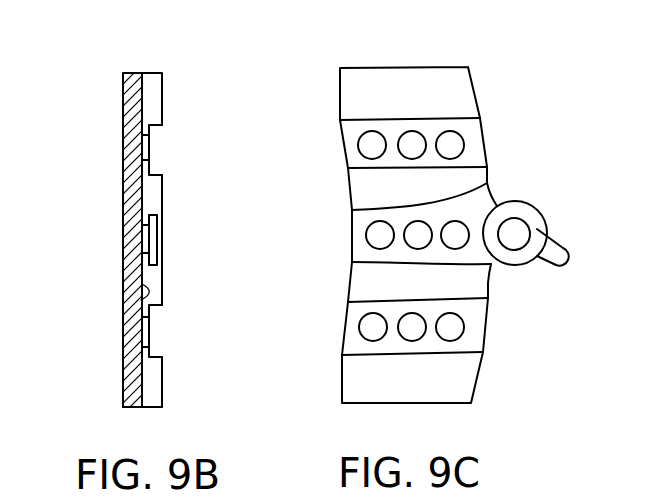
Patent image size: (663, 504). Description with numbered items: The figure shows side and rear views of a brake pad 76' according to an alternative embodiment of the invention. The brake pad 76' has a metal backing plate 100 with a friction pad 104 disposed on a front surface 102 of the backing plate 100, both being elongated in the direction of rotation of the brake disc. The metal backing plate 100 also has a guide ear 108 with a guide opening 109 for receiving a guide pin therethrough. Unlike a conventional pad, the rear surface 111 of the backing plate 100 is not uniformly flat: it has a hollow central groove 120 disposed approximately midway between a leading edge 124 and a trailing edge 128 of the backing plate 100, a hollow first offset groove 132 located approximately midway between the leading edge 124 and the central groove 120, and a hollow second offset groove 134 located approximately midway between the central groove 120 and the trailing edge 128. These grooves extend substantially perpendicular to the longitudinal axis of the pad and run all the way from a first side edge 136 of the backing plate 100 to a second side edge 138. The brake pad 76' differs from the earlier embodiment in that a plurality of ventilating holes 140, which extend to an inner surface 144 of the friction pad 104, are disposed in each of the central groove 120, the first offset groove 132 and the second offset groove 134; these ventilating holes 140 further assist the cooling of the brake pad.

In FIG. 9B, the brake pad 76' is at (74, 50).
In FIG. 9C, the brake pad 76' is at (312, 42).
In FIG. 9B, the metal backing plate 100 is at (162, 80).
In FIG. 9C, the metal backing plate 100 is at (340, 93).
In FIG. 9B, the front surface 102 is at (140, 107).
In FIG. 9B, the friction pad 104 is at (130, 192).
In FIG. 9C, the guide ear 108 is at (517, 213).
In FIG. 9C, the guide opening 109 is at (520, 245).
In FIG. 9C, the rear surface 111 is at (400, 82).
In FIG. 9B, the central groove 120 is at (153, 222).
In FIG. 9C, the central groove 120 is at (364, 240).
In FIG. 9B, the leading edge 124 is at (140, 407).
In FIG. 9C, the leading edge 124 is at (352, 404).
In FIG. 9B, the trailing edge 128 is at (142, 73).
In FIG. 9C, the trailing edge 128 is at (437, 67).
In FIG. 9B, the first offset groove 132 is at (157, 312).
In FIG. 9C, the first offset groove 132 is at (352, 327).
In FIG. 9B, the second offset groove 134 is at (158, 132).
In FIG. 9C, the second offset groove 134 is at (348, 136).
In FIG. 9C, the first side edge 136 is at (347, 186).
In FIG. 9C, the second side edge 138 is at (476, 89).
In FIG. 9B, the ventilating holes 140 is at (147, 148).
In FIG. 9C, the ventilating holes 140 is at (453, 142).
In FIG. 9B, the inner surface 144 is at (141, 293).